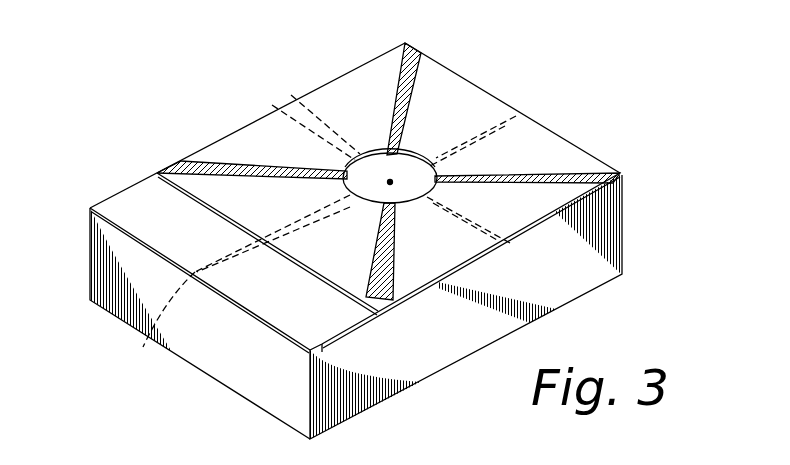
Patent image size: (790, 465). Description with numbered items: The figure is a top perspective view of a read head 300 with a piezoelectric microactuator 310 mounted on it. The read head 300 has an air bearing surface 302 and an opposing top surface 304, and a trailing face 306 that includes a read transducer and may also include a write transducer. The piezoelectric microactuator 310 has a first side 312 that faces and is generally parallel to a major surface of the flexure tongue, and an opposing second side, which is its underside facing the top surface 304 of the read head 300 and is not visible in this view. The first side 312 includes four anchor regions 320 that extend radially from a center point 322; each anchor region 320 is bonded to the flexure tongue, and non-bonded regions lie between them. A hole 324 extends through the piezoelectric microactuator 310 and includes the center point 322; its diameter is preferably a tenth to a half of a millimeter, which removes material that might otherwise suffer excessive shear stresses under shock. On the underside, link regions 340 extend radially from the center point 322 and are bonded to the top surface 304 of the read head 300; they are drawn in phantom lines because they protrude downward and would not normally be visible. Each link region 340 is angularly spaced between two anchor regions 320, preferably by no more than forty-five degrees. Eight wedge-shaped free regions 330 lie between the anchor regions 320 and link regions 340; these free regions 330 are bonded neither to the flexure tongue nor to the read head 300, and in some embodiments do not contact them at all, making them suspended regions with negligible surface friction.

The read head 300 is at (357, 412).
The air bearing surface 302 is at (422, 385).
The top surface 304 is at (125, 200).
The trailing face 306 is at (203, 359).
The piezoelectric microactuator 310 is at (463, 90).
The first side 312 is at (477, 88).
The anchor regions 320 is at (172, 168).
The center point 322 is at (390, 182).
The hole 324 is at (348, 166).
The free regions 330 is at (227, 143).
The link regions 340 is at (273, 105).